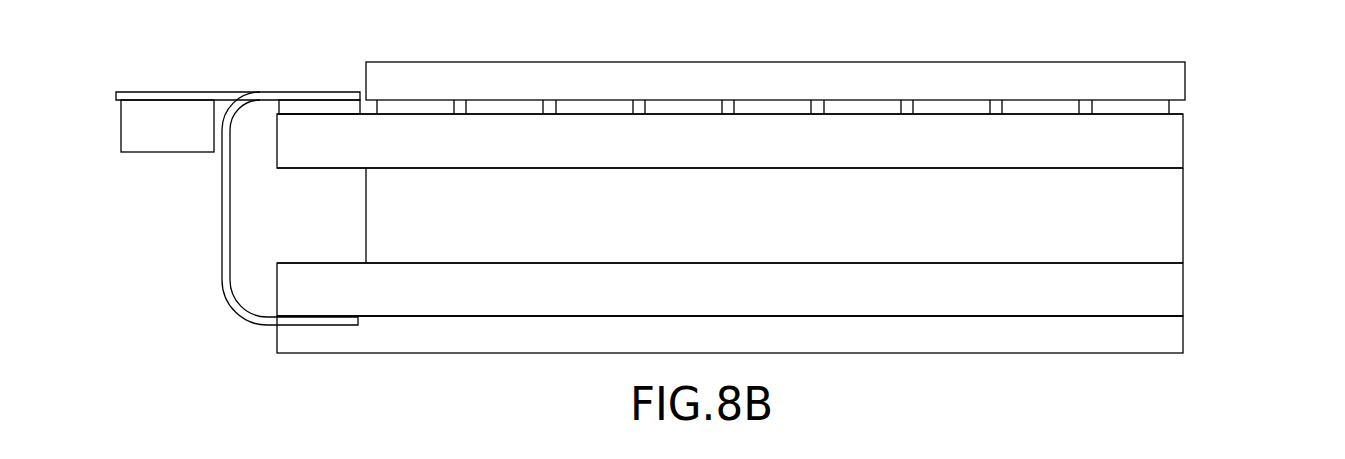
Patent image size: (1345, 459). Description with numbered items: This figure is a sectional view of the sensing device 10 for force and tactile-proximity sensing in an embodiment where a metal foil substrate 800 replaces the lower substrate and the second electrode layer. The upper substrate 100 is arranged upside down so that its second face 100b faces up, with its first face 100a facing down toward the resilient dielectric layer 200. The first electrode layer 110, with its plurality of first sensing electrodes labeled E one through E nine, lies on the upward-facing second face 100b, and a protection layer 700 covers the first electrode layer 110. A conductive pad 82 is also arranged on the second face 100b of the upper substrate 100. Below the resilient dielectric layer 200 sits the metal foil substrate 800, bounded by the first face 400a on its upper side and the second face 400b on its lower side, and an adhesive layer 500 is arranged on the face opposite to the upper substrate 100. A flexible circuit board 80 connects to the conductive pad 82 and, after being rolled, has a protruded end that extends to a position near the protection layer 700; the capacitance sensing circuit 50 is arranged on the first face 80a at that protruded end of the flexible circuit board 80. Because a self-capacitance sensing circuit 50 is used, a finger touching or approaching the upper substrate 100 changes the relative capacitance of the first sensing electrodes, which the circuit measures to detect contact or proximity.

The sensing device 10 is at (664, 53).
The capacitance sensing circuit 50 is at (165, 153).
The flexible circuit board 80 is at (222, 210).
The first face of flexible circuit board 80a is at (183, 96).
The conductive pad 82 is at (298, 105).
The upper substrate 100 is at (1172, 138).
The first face of upper substrate 100a is at (1135, 168).
The second face of upper substrate 100b is at (1087, 98).
The first electrode layer 110 is at (1166, 106).
The resilient dielectric layer 200 is at (1172, 215).
The first face of lower substrate 400a is at (1158, 263).
The second face of lower substrate 400b is at (1157, 316).
The adhesive layer 500 is at (1172, 335).
The protection layer 700 is at (777, 73).
The metal foil substrate 800 is at (1172, 290).